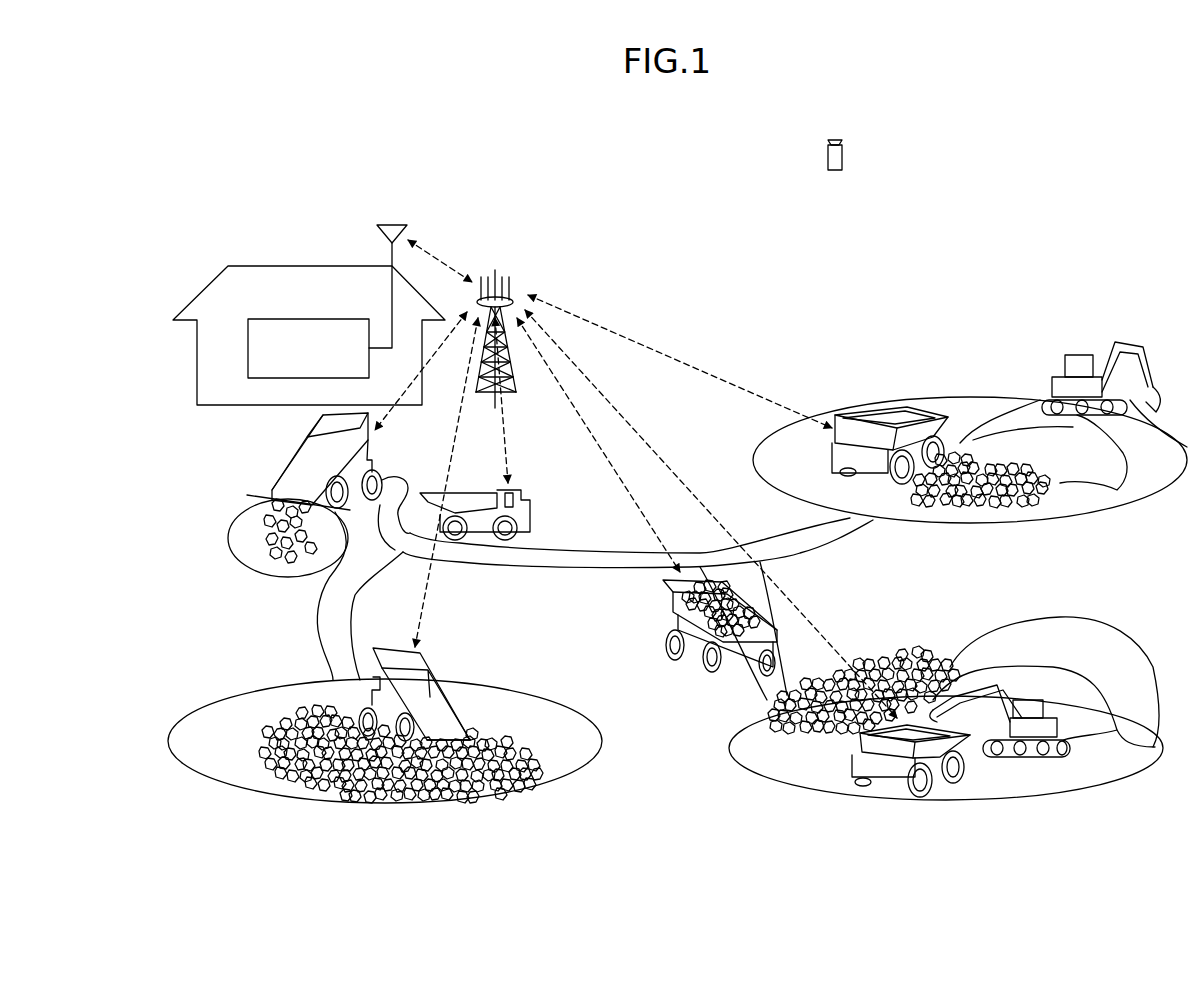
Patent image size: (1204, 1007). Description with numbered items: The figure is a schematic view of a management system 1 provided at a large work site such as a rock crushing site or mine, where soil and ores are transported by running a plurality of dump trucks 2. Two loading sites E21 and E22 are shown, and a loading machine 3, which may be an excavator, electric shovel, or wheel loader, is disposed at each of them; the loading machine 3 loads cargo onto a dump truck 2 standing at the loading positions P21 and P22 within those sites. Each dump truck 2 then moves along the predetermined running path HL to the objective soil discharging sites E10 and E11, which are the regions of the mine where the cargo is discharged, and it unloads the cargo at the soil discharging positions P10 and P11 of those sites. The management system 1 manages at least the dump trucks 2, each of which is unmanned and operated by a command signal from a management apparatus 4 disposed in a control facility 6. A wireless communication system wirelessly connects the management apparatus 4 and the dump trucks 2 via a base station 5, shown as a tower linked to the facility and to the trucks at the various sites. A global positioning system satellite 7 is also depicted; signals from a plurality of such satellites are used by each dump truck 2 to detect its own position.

The management system 1 is at (1025, 180).
The dump truck 2 is at (303, 437).
The loading machine 3 is at (1082, 355).
The management apparatus 4 is at (285, 316).
The base station 5 is at (502, 256).
The control facility 6 is at (202, 273).
The global positioning system satellite 7 is at (835, 172).
The soil discharging site E10 is at (256, 577).
The soil discharging site E11 is at (233, 790).
The loading site E21 is at (938, 397).
The loading site E22 is at (1033, 798).
The soil discharging position P10 is at (291, 486).
The soil discharging position P11 is at (470, 725).
The loading position P21 is at (867, 493).
The loading position P22 is at (985, 783).
The running path HL is at (540, 567).